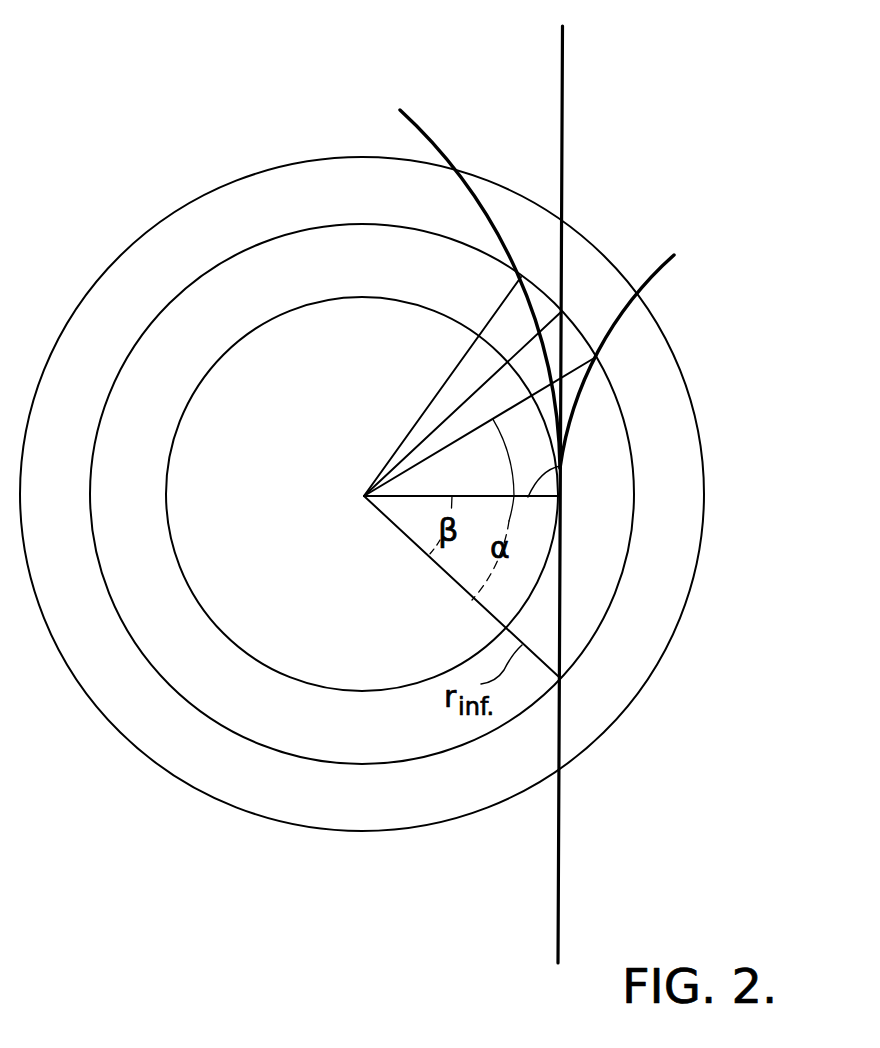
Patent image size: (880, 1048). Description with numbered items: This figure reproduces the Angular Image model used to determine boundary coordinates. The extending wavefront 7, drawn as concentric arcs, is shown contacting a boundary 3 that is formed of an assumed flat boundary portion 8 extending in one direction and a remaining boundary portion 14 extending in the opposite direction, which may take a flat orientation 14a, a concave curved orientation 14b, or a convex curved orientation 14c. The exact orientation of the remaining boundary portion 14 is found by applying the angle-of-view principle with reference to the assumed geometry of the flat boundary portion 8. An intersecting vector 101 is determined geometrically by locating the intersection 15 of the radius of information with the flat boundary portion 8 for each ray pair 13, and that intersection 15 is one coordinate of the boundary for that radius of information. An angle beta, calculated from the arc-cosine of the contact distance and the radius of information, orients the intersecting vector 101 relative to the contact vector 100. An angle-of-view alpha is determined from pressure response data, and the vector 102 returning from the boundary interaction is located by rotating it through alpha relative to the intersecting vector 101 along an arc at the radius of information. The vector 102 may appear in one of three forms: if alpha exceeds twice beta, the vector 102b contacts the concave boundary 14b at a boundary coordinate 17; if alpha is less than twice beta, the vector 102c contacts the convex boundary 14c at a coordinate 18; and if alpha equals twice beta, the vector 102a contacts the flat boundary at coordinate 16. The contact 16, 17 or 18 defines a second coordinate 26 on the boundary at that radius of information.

The boundary 3 is at (562, 55).
The extending wavefront 7 is at (232, 345).
The flat boundary portion 8 is at (558, 820).
The ray pair 13 is at (372, 468).
The remaining boundary portion 14 is at (563, 90).
The flat orientation of boundary portion 14a is at (562, 148).
The concave curved boundary 14b is at (442, 150).
The convex curved boundary 14c is at (667, 264).
The intersection 15 is at (560, 677).
The coordinate 16 is at (561, 312).
The boundary coordinate 17 is at (522, 277).
The coordinate 18 is at (596, 356).
The second coordinate 26 is at (646, 265).
The contact vector 100 is at (560, 465).
The intersecting vector 101 is at (431, 565).
The vector returning from a boundary interaction 102 is at (458, 410).
The vector contacting flat boundary 102a is at (478, 385).
The vector contacting concave boundary 102b is at (499, 309).
The vector contacting convex boundary 102c is at (446, 442).